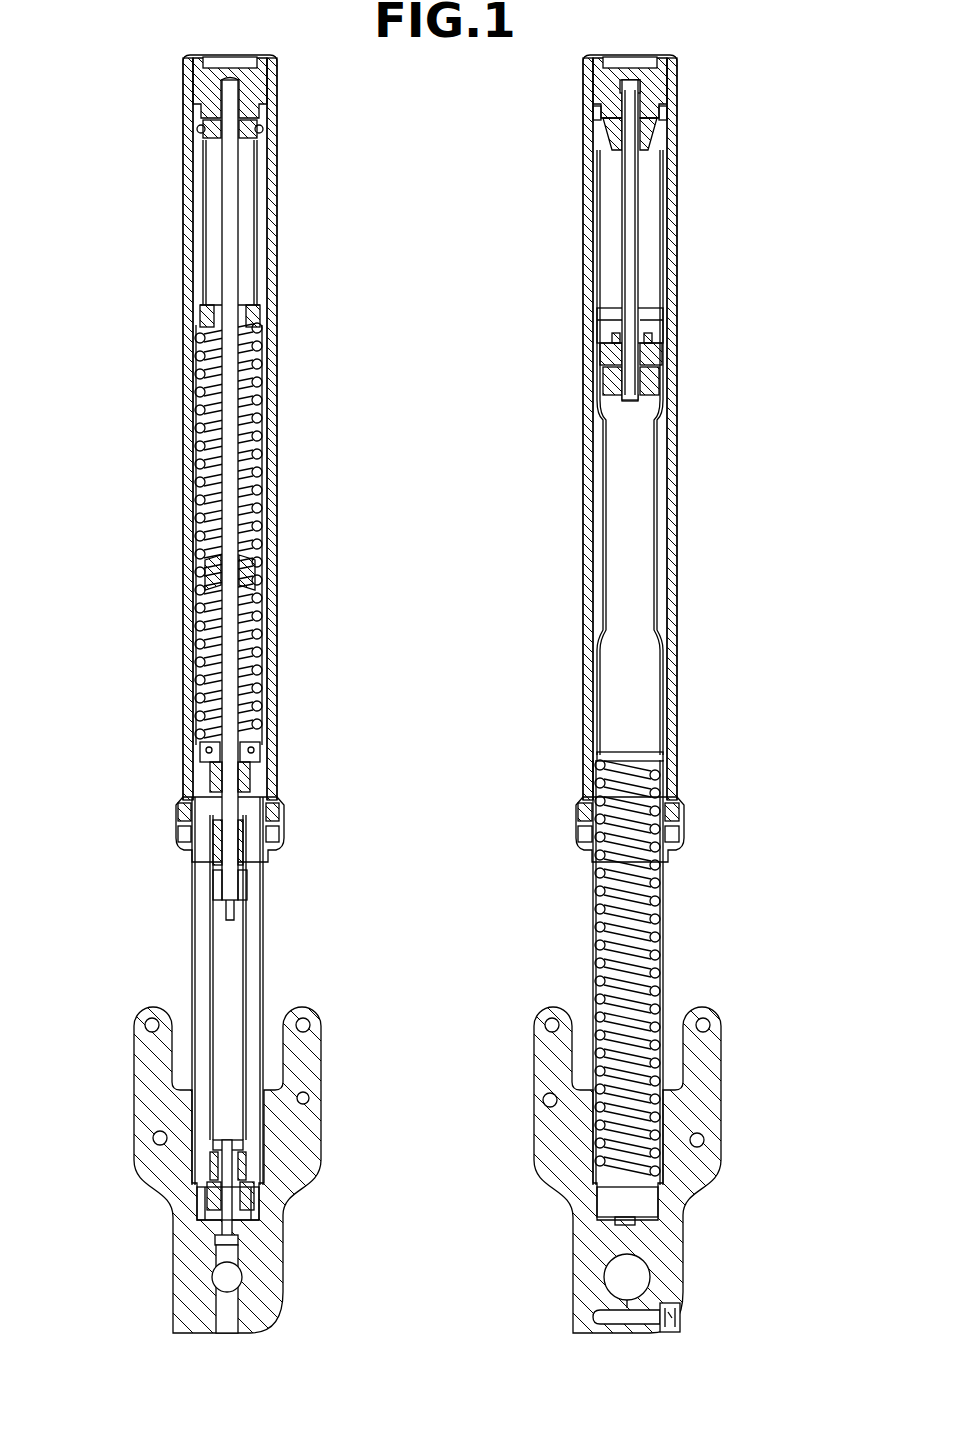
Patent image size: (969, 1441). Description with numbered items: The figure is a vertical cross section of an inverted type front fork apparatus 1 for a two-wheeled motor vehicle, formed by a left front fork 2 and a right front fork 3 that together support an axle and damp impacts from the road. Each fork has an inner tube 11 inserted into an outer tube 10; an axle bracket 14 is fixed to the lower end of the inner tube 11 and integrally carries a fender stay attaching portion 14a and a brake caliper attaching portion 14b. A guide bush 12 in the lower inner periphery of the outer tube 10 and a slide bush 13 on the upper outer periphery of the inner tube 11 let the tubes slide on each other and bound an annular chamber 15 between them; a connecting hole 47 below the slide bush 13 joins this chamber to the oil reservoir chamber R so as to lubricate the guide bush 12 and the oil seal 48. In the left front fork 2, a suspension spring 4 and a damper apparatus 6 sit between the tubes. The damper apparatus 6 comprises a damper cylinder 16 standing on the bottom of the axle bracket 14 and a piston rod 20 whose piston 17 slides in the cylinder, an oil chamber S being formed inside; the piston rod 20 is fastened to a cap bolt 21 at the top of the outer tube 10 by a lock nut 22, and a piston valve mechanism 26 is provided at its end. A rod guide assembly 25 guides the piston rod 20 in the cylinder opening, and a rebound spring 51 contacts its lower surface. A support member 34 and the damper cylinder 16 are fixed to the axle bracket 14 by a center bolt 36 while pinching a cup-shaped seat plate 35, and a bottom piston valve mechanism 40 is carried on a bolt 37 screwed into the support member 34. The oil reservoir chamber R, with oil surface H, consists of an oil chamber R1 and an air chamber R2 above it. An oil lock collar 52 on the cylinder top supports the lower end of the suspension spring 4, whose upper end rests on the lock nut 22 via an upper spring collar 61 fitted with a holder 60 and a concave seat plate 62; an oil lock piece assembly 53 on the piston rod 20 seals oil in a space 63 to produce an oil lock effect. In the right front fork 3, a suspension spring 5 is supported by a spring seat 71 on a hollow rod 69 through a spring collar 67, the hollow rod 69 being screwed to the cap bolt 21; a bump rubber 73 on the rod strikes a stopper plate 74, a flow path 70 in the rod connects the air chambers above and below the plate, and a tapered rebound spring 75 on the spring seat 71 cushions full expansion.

The inverted type front fork apparatus 1 is at (437, 120).
The left front fork 2 is at (292, 88).
The right front fork 3 is at (692, 88).
The suspension spring 4 is at (268, 500).
The suspension spring 5 is at (665, 905).
The damper apparatus 6 is at (212, 790).
The outer tube 10 is at (275, 205).
The inner tube 11 is at (264, 915).
The guide bush 12 is at (268, 757).
The slide bush 13 is at (263, 345).
The axle bracket 14 is at (275, 1250).
The fender stay attaching portion 14a is at (315, 1055).
The brake caliper attaching portion 14b is at (150, 1060).
The annular chamber 15 is at (262, 585).
The damper cylinder 16 is at (244, 965).
The piston 17 is at (215, 885).
The piston rod 20 is at (235, 680).
The cap bolt 21 is at (215, 95).
The lock nut 22 is at (210, 130).
The rod guide assembly 25 is at (258, 800).
The piston valve mechanism 26 is at (247, 890).
The support member 34 is at (240, 1180).
The cup-shaped seat plate 35 is at (255, 1230).
The center bolt 36 is at (240, 1290).
The bolt 37 is at (168, 1140).
The bottom piston valve mechanism 40 is at (244, 1142).
The connecting hole 47 is at (263, 385).
The oil seal 48 is at (284, 805).
The rebound spring 51 is at (205, 830).
The oil lock collar 52 is at (262, 730).
The oil lock piece assembly 53 is at (206, 552).
The holder 60 is at (258, 310).
The upper spring collar 61 is at (262, 250).
The concave seat plate 62 is at (260, 133).
The space 63 is at (215, 745).
The spring collar 67 is at (668, 555).
The hollow rod 69 is at (655, 195).
The flow path 70 is at (624, 252).
The spring seat 71 is at (658, 385).
The bump rubber 73 is at (660, 135).
The stopper plate 74 is at (665, 310).
The rebound spring 75 is at (665, 350).
The oil surface H is at (279, 425).
The oil reservoir chamber R is at (270, 455).
The oil chamber R1 is at (266, 545).
The air chamber R2 is at (245, 172).
The oil chamber S is at (235, 975).